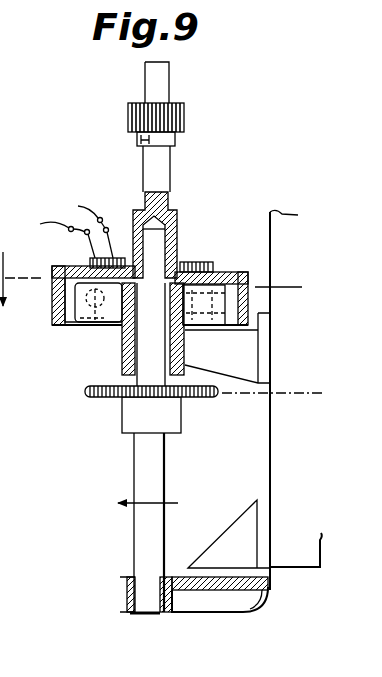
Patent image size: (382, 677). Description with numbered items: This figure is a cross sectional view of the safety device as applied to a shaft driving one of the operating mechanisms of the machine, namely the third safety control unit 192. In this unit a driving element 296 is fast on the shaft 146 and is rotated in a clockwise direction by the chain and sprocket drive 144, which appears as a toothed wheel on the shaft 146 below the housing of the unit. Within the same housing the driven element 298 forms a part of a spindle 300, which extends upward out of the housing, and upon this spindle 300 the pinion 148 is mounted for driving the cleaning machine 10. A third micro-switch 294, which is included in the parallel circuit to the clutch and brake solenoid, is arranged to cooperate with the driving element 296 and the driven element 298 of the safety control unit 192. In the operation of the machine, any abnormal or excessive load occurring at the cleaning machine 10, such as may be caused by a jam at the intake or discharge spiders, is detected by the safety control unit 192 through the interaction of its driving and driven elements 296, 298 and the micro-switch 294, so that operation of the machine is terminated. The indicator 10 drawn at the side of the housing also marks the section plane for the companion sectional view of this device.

The cleaning machine 10 is at (300, 260).
The chain and sprocket drive 144 is at (92, 400).
The shaft 146 is at (135, 470).
The pinion 148 is at (185, 113).
The third safety control unit 192 is at (108, 146).
The third micro-switch 294 is at (203, 332).
The driving element 296 is at (97, 324).
The driven element 298 is at (72, 267).
The spindle 300 is at (182, 170).